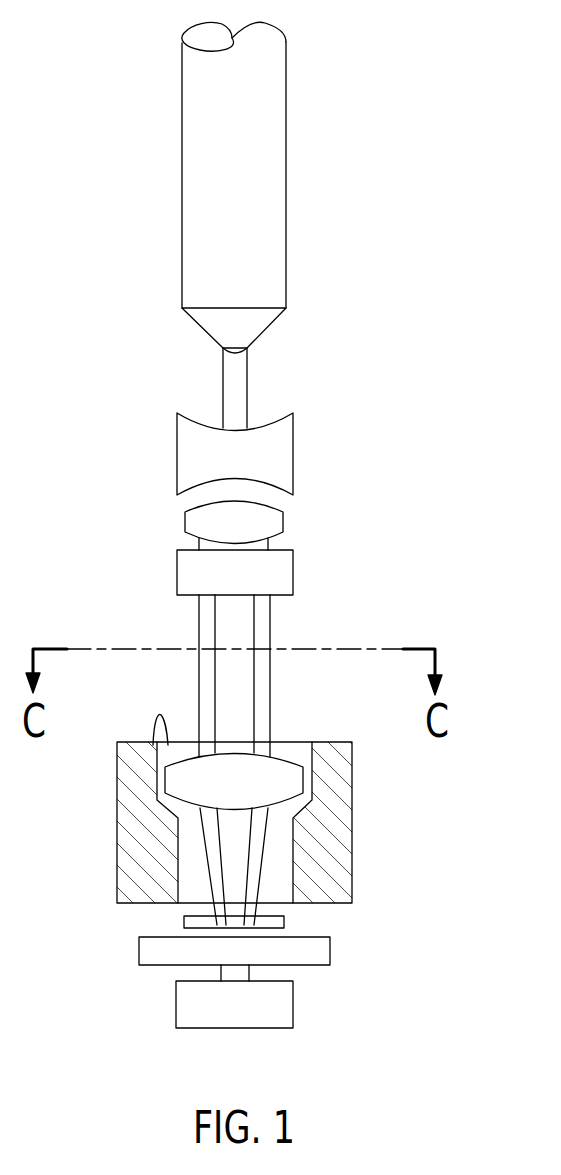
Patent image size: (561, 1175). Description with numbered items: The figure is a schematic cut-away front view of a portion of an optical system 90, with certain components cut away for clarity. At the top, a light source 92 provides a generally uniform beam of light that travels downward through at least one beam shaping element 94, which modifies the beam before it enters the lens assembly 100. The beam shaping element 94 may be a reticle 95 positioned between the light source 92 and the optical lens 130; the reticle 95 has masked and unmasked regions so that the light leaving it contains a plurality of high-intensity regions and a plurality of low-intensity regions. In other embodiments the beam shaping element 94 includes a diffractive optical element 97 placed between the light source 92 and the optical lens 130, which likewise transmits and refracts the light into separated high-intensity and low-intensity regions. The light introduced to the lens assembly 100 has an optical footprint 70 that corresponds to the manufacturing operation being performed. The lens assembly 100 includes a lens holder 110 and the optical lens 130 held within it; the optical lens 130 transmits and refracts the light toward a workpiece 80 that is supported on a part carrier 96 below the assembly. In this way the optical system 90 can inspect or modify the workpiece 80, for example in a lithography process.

The optical system 90 is at (345, 224).
The light source 92 is at (286, 238).
The beam shaping element 94 is at (342, 498).
The diffractive optical element 97 is at (293, 455).
The reticle 95 is at (293, 570).
The optical footprint 70 is at (287, 630).
The lens assembly 100 is at (290, 831).
The lens holder 110 is at (362, 878).
The optical lens 130 is at (176, 753).
The workpiece 80 is at (184, 920).
The part carrier 96 is at (293, 1002).